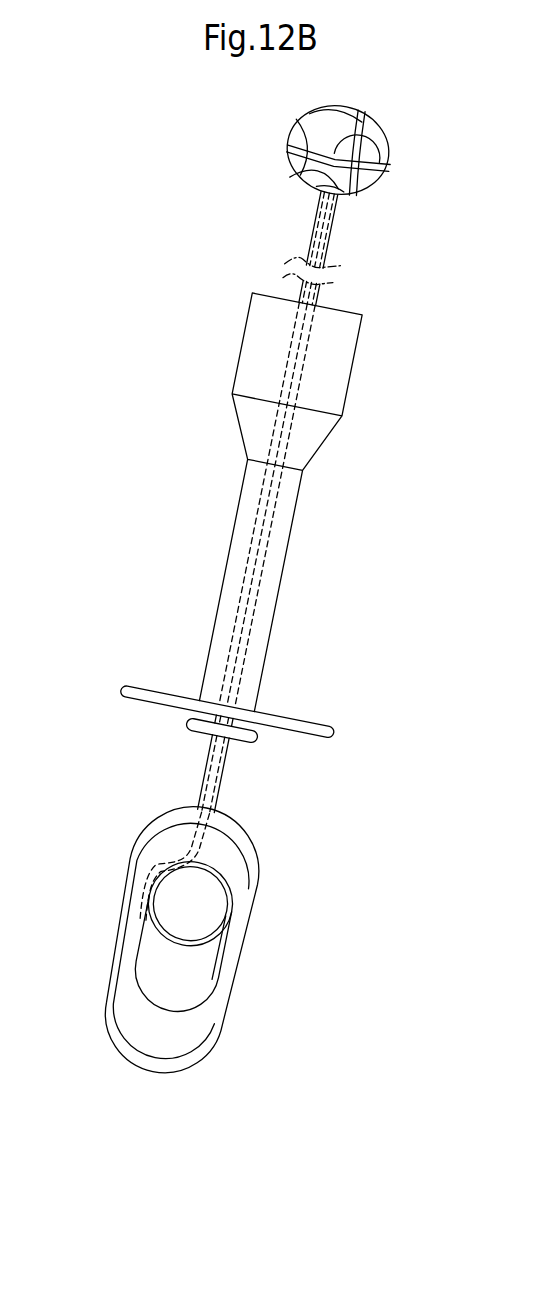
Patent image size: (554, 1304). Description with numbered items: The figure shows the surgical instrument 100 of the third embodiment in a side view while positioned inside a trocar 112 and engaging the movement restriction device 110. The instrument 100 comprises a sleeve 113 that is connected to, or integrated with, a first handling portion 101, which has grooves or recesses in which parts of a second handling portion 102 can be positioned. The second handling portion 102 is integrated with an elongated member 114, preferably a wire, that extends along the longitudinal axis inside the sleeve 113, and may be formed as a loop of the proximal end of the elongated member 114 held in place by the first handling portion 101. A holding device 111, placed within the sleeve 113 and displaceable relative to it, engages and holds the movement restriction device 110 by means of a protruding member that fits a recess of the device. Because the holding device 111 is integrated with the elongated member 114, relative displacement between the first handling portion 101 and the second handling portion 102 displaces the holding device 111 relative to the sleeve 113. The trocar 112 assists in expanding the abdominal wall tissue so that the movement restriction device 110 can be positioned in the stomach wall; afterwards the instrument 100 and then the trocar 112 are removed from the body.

The surgical instrument 100 is at (197, 296).
The first handling portion 101 is at (227, 847).
The second handling portion 102 is at (160, 942).
The movement restriction device 110 is at (318, 130).
The holding device 111 is at (333, 175).
The trocar 112 is at (297, 522).
The sleeve 113 is at (330, 250).
The elongated member 114 is at (333, 213).